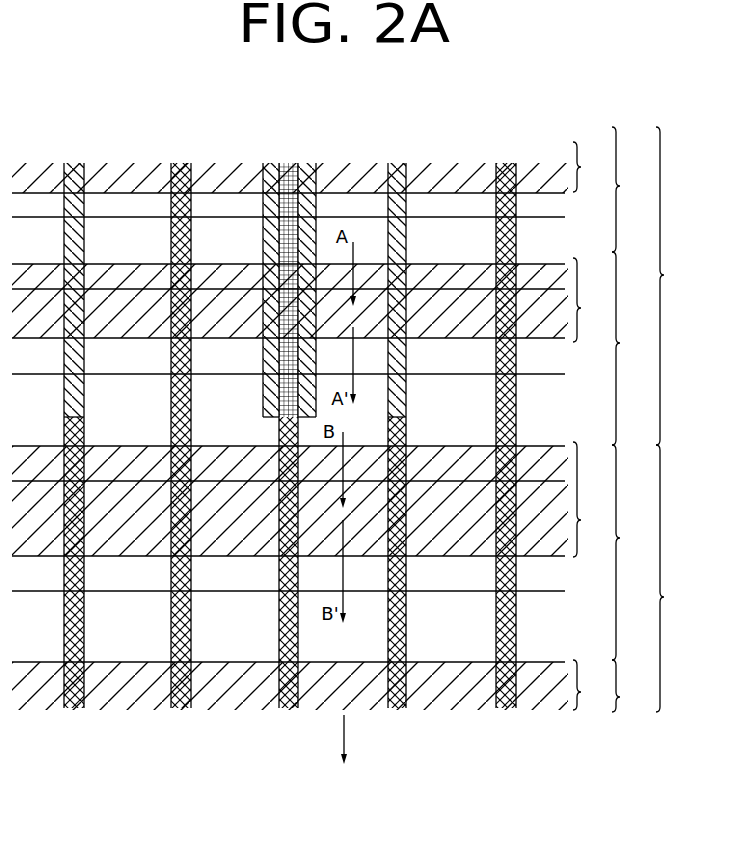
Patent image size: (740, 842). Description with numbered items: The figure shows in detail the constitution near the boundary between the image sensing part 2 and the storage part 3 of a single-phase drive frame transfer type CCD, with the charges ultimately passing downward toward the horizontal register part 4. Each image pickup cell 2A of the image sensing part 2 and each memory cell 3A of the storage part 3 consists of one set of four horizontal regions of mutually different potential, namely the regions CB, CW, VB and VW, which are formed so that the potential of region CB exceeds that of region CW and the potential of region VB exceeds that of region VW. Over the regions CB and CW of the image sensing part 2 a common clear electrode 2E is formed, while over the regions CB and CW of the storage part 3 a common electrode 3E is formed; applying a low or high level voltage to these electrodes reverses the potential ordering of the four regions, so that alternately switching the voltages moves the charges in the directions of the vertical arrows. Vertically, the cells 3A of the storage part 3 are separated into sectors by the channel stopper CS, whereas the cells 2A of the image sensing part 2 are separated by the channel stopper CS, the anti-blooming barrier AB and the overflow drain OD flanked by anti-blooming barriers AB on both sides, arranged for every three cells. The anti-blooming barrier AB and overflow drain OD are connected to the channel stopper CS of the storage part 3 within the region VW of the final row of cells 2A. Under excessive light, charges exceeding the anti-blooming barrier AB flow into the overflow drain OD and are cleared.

The anti-blooming barrier AB is at (236, 277).
The channel stopper CS is at (290, 437).
The overflow drain OD is at (289, 277).
The region CW is at (290, 359).
The region CB is at (290, 487).
The region VB is at (288, 392).
The region VW is at (288, 439).
The common electrode of image sensing part 2E is at (589, 242).
The image pickup cell 2A is at (631, 286).
The image sensing part 2 is at (694, 292).
The common electrode of storage part 3E is at (591, 583).
The memory cell 3A is at (631, 578).
The storage part 3 is at (694, 608).
The horizontal register part 4 is at (344, 753).